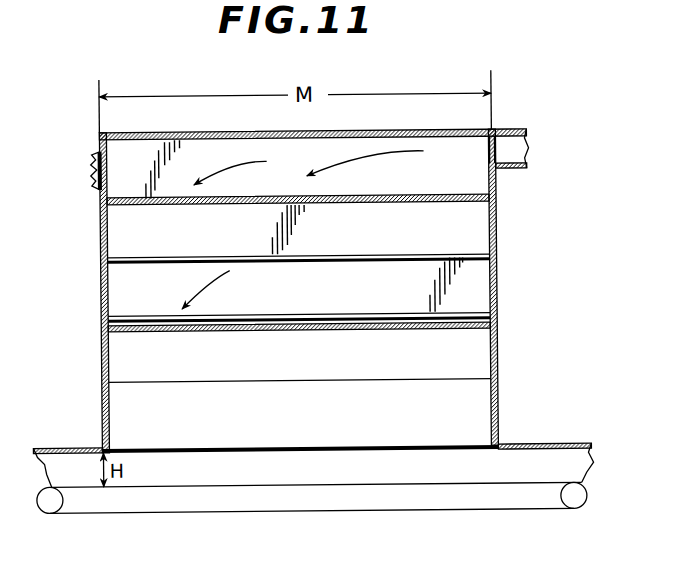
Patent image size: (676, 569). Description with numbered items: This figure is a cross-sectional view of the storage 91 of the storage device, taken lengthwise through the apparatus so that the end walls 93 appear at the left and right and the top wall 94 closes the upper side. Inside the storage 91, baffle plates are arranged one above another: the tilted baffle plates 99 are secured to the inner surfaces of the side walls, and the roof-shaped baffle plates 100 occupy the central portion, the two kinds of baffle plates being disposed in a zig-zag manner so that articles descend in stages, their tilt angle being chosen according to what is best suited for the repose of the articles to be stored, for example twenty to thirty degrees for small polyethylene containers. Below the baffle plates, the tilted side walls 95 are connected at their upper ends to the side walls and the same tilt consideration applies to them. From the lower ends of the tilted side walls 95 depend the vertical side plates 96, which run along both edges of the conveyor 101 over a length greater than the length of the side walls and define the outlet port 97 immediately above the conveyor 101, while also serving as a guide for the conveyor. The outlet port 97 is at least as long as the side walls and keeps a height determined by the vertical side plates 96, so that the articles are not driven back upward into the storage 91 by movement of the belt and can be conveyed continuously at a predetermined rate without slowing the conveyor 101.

The storage 91 is at (465, 290).
The end walls 93 is at (101, 275).
The top wall 94 is at (385, 131).
The tilted side walls 95 is at (470, 400).
The vertical side plates 96 is at (560, 442).
The outlet port 97 is at (500, 447).
The tilted baffle plates 99 is at (130, 295).
The roof-shaped baffle plates 100 is at (127, 230).
The conveyor 101 is at (290, 512).